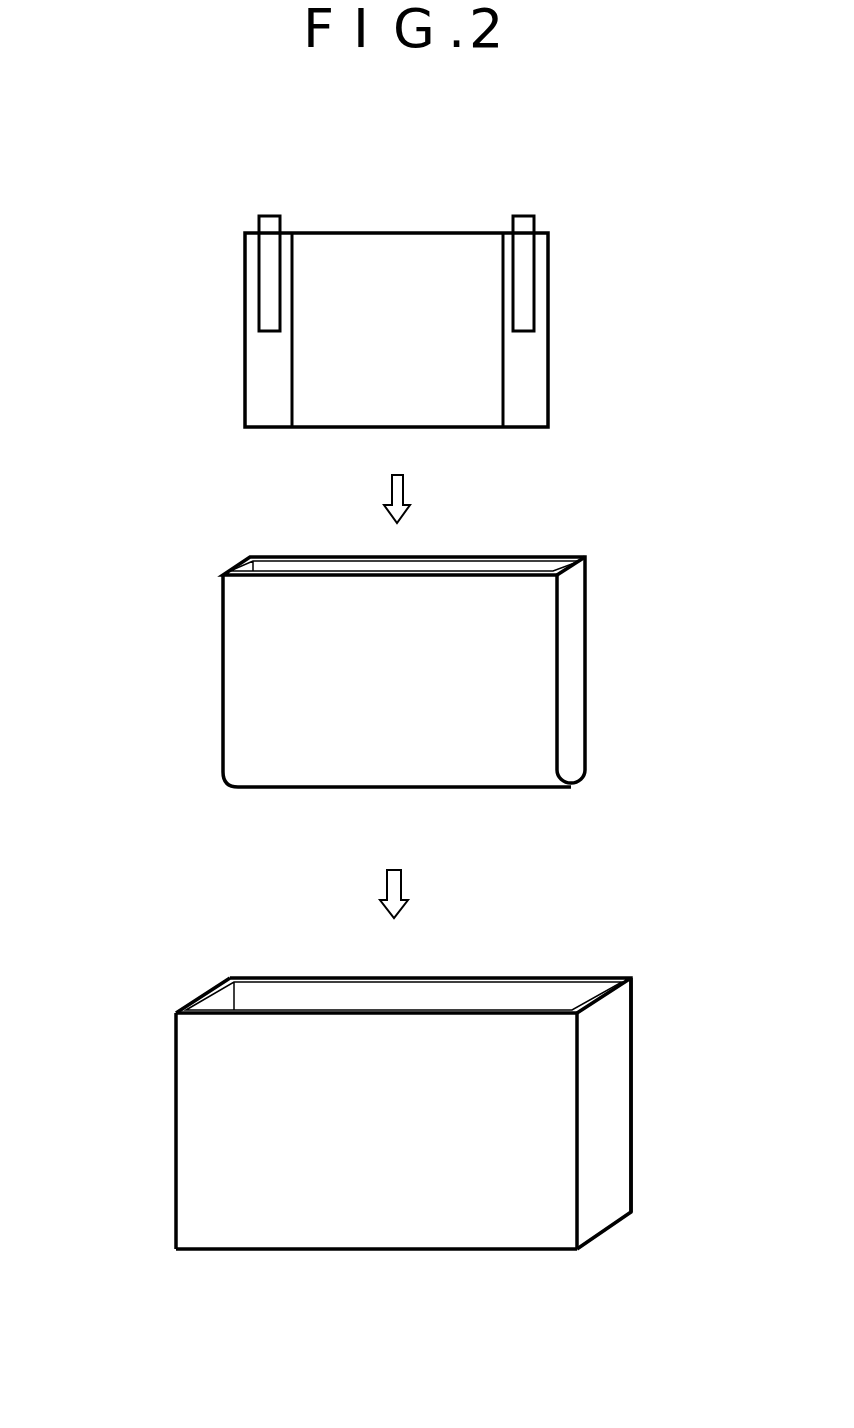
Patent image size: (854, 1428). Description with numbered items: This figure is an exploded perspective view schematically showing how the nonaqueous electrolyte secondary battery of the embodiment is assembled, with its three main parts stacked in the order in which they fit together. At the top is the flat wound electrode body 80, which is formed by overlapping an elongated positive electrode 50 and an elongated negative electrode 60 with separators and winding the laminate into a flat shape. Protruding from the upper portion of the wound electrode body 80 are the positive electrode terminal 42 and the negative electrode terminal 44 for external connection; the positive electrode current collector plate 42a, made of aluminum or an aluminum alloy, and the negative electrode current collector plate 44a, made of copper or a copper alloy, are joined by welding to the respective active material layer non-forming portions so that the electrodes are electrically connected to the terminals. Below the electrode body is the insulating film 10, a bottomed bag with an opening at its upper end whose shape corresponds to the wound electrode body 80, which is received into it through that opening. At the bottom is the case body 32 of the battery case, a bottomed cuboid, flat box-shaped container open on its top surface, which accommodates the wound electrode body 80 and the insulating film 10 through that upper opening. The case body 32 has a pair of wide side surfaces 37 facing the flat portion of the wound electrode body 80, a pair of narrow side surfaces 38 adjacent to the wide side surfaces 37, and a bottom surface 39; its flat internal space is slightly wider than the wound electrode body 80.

The wound electrode body 80 is at (588, 202).
The positive electrode 50 is at (245, 395).
The negative electrode 60 is at (548, 395).
The positive electrode terminal 42 is at (272, 225).
The positive electrode current collector plate 42a is at (271, 305).
The negative electrode terminal 44 is at (524, 225).
The negative electrode current collector plate 44a is at (527, 305).
The insulating film 10 is at (590, 637).
The case body 32 is at (403, 1167).
The wide side surfaces 37 is at (405, 1207).
The narrow side surfaces 38 is at (176, 1182).
The bottom surface 39 is at (503, 1250).